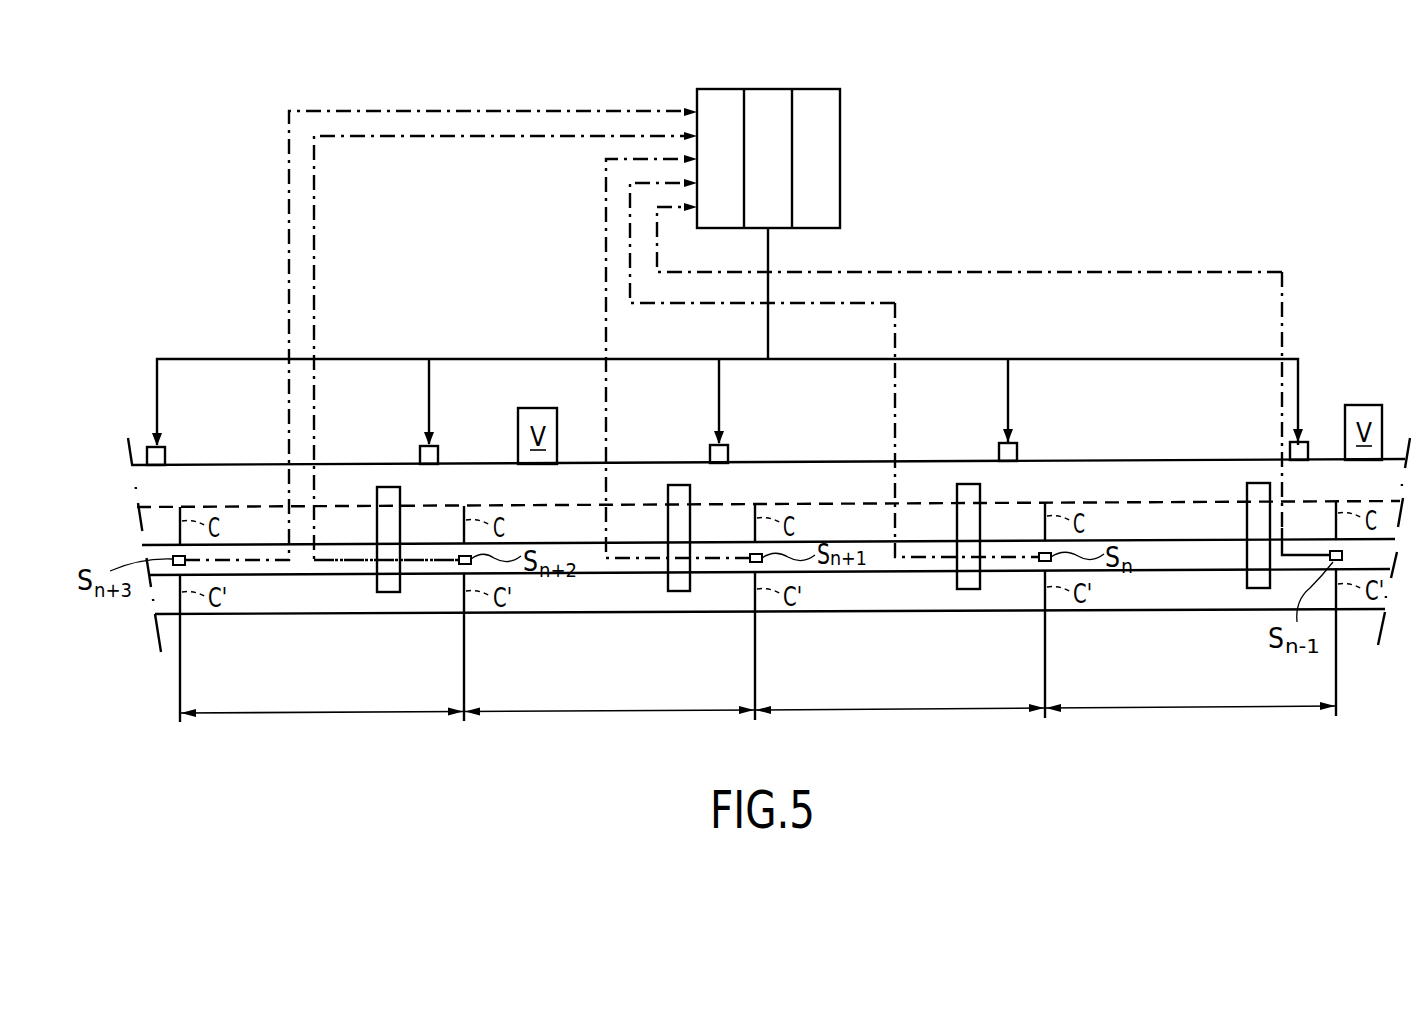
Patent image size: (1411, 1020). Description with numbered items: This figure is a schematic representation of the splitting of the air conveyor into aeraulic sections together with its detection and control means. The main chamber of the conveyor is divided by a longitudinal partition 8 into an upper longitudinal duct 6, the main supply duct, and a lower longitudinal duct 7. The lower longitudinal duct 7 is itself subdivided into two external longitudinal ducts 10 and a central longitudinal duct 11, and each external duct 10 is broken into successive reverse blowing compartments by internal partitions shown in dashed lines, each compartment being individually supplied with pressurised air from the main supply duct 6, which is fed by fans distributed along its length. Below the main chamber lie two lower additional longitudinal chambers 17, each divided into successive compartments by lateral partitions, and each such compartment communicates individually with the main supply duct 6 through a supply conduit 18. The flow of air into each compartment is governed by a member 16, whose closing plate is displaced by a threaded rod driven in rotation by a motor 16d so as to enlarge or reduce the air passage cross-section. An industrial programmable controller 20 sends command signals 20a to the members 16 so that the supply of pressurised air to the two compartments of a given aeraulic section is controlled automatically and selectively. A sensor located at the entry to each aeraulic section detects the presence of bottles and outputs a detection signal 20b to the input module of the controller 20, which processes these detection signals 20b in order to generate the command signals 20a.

The upper longitudinal duct 6 is at (124, 466).
The lower longitudinal duct 7 is at (124, 509).
The longitudinal partition 8 is at (428, 503).
The external longitudinal duct 10 is at (766, 478).
The central longitudinal duct 11 is at (348, 508).
The member 16 is at (138, 420).
The motor 16d is at (166, 458).
The lower additional longitudinal chamber 17 is at (132, 613).
The supply conduit 18 is at (390, 592).
The industrial programmable controller 20 is at (880, 124).
The command signal 20a is at (158, 398).
The detection signal 20b is at (450, 133).